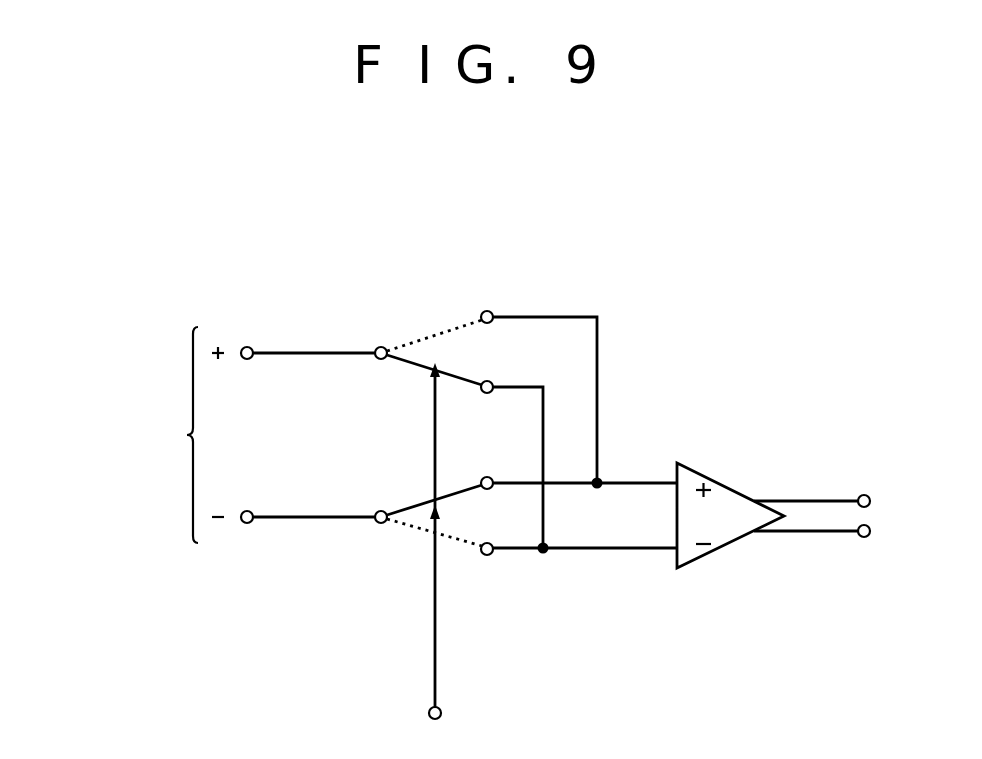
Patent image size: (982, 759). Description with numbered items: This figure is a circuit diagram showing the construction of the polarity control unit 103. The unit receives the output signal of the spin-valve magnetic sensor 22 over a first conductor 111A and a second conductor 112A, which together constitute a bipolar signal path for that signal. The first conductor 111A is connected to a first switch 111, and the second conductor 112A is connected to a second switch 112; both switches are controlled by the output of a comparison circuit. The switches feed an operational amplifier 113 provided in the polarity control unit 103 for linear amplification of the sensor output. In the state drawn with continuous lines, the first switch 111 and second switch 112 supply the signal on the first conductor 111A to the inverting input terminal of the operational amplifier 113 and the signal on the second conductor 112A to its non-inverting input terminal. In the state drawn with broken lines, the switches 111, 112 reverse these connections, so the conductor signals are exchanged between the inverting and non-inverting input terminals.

The polarity control unit 103 is at (205, 231).
The spin-valve magnetic sensor 22 is at (115, 435).
The first switch 111 is at (367, 340).
The first conductor 111A is at (412, 336).
The second switch 112 is at (367, 520).
The second conductor 112A is at (412, 484).
The operational amplifier 113 is at (773, 510).